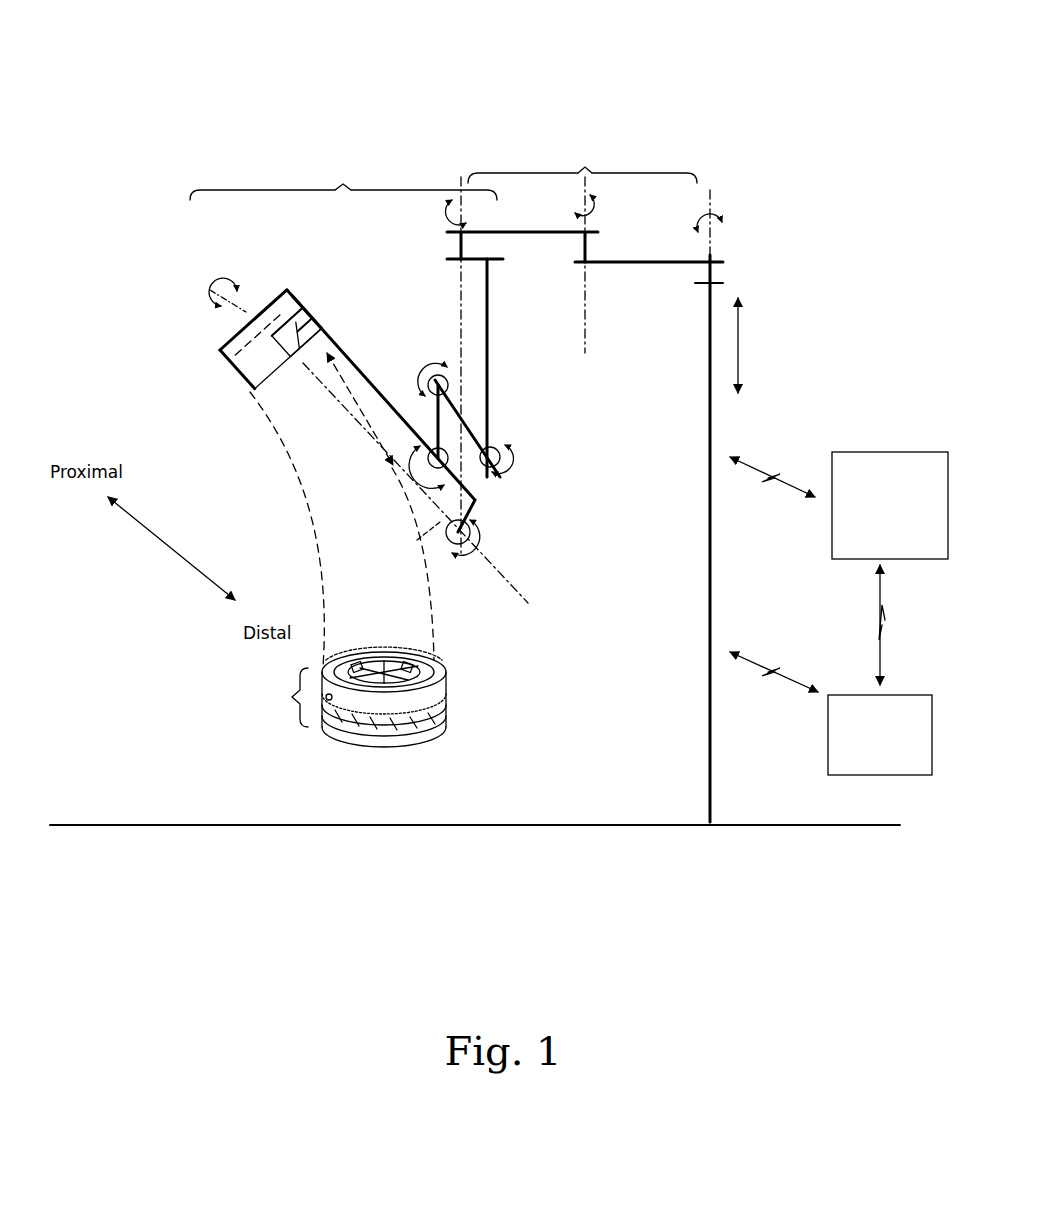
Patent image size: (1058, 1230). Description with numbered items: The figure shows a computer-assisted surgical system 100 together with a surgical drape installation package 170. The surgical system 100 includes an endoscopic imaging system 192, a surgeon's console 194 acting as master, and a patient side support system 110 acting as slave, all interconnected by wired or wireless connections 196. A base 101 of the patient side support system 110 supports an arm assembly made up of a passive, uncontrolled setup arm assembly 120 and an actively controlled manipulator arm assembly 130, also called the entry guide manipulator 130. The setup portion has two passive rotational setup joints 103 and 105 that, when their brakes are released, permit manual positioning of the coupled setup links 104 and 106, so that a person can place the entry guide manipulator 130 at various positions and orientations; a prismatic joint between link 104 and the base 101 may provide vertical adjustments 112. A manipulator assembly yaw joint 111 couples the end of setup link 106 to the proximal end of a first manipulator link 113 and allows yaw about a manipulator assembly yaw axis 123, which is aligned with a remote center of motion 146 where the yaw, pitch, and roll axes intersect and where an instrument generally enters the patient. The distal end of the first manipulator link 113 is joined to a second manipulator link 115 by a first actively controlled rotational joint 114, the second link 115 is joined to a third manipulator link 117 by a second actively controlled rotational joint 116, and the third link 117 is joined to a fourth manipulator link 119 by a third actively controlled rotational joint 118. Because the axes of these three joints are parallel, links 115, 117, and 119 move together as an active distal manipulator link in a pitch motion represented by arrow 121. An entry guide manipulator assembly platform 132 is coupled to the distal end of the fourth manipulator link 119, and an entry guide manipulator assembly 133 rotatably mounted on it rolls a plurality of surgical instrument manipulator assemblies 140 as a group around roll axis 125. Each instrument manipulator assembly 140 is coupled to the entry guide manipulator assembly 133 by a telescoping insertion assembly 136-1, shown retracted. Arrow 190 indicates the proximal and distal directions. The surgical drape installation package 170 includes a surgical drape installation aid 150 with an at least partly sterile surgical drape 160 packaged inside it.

The surgical system 100 is at (823, 170).
The base 101 is at (713, 748).
The passive rotational setup joint 103 is at (712, 273).
The setup link 104 is at (625, 260).
The passive rotational setup joint 105 is at (590, 248).
The setup link 106 is at (513, 228).
The patient side support system 110 is at (580, 417).
The manipulator assembly yaw joint 111 is at (450, 247).
The vertical adjustments 112 is at (745, 357).
The first manipulator link 113 is at (497, 342).
The first actively controlled rotational joint 114 is at (515, 458).
The second manipulator link 115 is at (468, 412).
The second actively controlled rotational joint 116 is at (443, 390).
The third manipulator link 117 is at (440, 425).
The third actively controlled rotational joint 118 is at (433, 443).
The fourth manipulator link 119 is at (350, 358).
The setup arm assembly 120 is at (582, 164).
The arrow 121 is at (485, 540).
The manipulator assembly yaw axis 123 is at (447, 205).
The entry guide manipulator assembly roll axis 125 is at (222, 295).
The manipulator arm assembly 130 is at (343, 180).
The entry guide manipulator assembly platform 132 is at (268, 298).
The entry guide manipulator assembly 133 is at (253, 352).
The insertion assembly 136-1 is at (243, 385).
The surgical instrument manipulator assembly 140 is at (293, 318).
The remote center of motion 146 is at (468, 550).
The surgical drape installation aid 150 is at (415, 727).
The surgical drape 160 is at (437, 695).
The surgical drape installation package 170 is at (285, 697).
The proximal-distal direction 190 is at (165, 550).
The endoscopic imaging system 192 is at (880, 735).
The surgeon's console 194 is at (890, 505).
The connections 196 is at (852, 608).